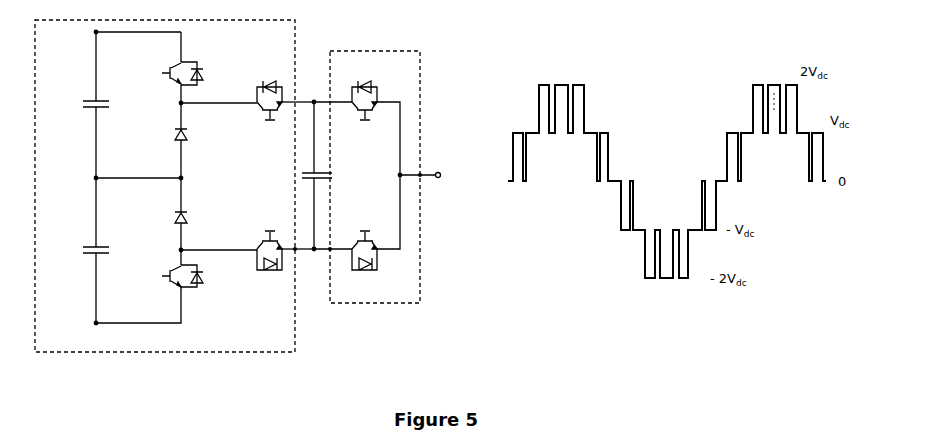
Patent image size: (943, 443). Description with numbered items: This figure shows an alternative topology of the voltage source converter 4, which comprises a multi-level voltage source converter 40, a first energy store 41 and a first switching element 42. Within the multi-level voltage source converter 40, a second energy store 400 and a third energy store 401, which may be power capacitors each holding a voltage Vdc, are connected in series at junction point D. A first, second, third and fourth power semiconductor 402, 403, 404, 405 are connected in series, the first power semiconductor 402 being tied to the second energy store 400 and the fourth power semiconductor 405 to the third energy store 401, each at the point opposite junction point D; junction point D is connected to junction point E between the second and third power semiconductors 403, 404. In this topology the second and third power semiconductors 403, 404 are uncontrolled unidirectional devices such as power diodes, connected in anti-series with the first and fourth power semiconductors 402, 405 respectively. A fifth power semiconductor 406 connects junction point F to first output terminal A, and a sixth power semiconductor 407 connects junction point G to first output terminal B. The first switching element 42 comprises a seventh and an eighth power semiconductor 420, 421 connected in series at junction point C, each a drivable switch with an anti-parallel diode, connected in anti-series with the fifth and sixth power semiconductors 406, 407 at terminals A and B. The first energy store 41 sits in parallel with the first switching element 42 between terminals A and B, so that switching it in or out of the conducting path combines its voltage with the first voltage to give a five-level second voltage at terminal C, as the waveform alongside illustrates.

The voltage source converter 4 is at (247, 204).
The multi-level voltage source converter 40 is at (176, 186).
The first energy store 41 is at (314, 176).
The first switching element 42 is at (381, 177).
The second energy store 400 is at (80, 92).
The third energy store 401 is at (80, 263).
The first power semiconductor 402 is at (186, 63).
The second power semiconductor 403 is at (193, 145).
The third power semiconductor 404 is at (193, 209).
The fourth power semiconductor 405 is at (188, 287).
The fifth power semiconductor 406 is at (271, 109).
The sixth power semiconductor 407 is at (271, 245).
The seventh power semiconductor 420 is at (378, 94).
The eighth power semiconductor 421 is at (378, 250).